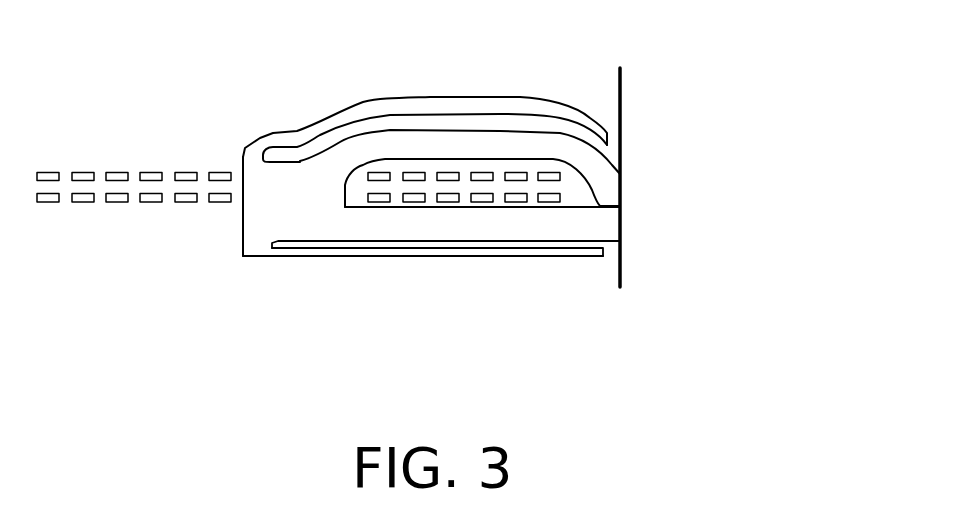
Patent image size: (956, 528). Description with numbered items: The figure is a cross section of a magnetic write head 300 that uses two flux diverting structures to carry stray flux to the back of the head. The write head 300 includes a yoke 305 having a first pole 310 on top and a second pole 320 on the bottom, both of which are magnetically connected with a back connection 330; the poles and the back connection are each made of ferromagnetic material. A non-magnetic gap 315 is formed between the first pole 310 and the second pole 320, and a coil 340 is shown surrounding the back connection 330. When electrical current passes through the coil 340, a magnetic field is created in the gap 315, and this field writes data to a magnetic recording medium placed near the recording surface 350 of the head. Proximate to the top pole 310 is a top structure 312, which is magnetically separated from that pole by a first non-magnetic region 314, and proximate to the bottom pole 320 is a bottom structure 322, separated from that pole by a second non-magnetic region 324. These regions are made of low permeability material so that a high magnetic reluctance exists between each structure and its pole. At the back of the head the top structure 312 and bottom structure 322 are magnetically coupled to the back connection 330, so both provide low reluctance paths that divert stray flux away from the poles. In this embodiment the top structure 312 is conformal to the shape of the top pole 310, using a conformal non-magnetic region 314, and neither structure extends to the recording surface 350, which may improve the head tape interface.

The write head 300 is at (708, 320).
The yoke 305 is at (343, 165).
The first pole 310 is at (613, 173).
The top structure 312 is at (483, 102).
The first non-magnetic region 314 is at (607, 155).
The non-magnetic gap 315 is at (620, 206).
The second pole 320 is at (612, 217).
The bottom structure 322 is at (360, 257).
The second non-magnetic region 324 is at (620, 242).
The back connection 330 is at (252, 213).
The coil 340 is at (47, 203).
The recording surface 350 is at (620, 258).